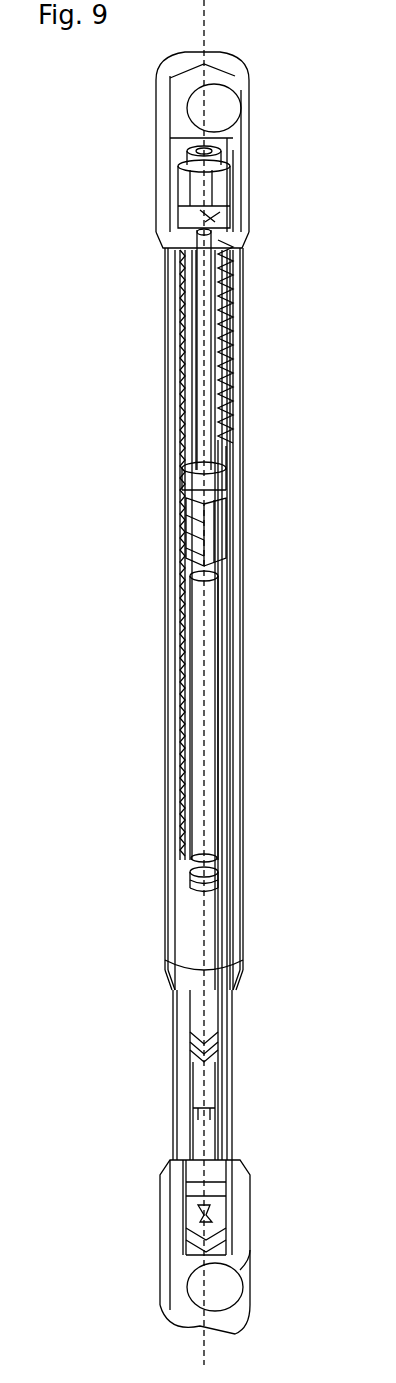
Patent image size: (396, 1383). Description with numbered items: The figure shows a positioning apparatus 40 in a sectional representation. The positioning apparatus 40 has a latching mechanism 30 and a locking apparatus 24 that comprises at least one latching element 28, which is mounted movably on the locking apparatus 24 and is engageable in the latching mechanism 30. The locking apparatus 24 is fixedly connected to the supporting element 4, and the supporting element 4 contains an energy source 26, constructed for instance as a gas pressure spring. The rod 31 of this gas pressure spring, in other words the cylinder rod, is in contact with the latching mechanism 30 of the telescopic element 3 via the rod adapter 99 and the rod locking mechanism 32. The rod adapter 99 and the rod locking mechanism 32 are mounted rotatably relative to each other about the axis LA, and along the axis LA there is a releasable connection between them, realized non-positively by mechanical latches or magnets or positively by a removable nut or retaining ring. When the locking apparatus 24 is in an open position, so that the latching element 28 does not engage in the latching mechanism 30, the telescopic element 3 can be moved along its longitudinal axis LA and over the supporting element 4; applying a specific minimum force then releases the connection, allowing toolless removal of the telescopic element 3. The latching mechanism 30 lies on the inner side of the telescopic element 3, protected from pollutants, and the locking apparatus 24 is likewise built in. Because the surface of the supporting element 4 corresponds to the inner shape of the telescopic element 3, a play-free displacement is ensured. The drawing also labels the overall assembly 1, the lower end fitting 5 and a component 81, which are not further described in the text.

The longitudinal axis LA is at (207, 25).
The actuator assembly 1 is at (212, 263).
The telescopic element 3 is at (170, 452).
The supporting element 4 is at (173, 1023).
The bottom clevis end fitting 5 is at (128, 1293).
The locking apparatus 24 is at (210, 537).
The energy source 26 is at (207, 908).
The latching element 28 is at (188, 520).
The latching mechanism 30 is at (222, 344).
The rod 31 is at (202, 370).
The rod locking mechanism 32 is at (230, 183).
The positioning apparatus 40 is at (257, 520).
The sleeve 81 is at (218, 440).
The rod adapter 99 is at (213, 218).